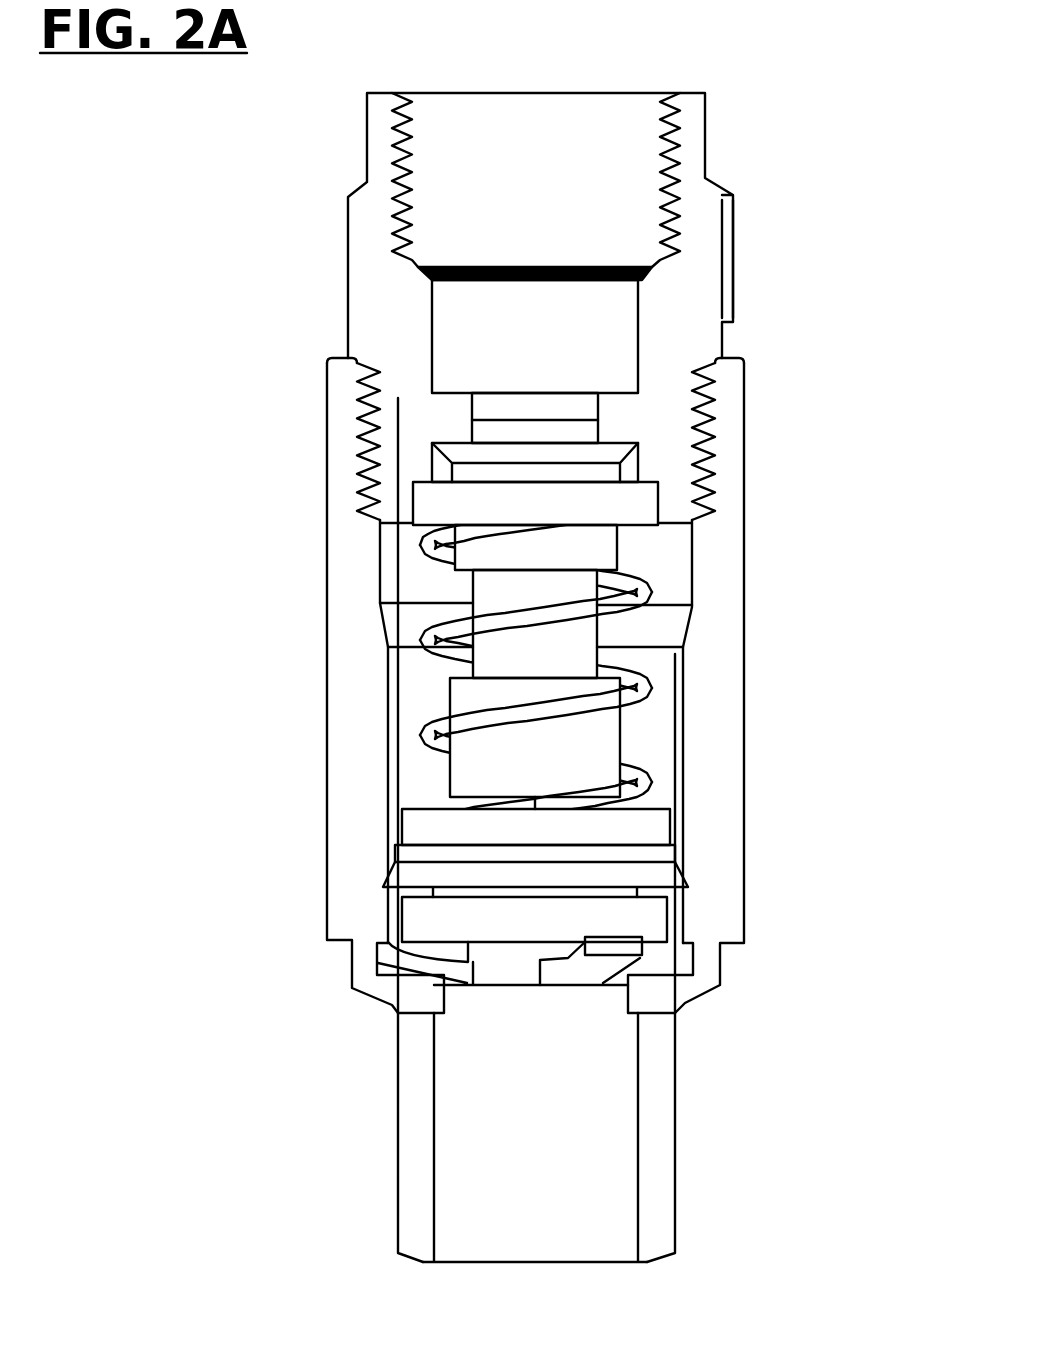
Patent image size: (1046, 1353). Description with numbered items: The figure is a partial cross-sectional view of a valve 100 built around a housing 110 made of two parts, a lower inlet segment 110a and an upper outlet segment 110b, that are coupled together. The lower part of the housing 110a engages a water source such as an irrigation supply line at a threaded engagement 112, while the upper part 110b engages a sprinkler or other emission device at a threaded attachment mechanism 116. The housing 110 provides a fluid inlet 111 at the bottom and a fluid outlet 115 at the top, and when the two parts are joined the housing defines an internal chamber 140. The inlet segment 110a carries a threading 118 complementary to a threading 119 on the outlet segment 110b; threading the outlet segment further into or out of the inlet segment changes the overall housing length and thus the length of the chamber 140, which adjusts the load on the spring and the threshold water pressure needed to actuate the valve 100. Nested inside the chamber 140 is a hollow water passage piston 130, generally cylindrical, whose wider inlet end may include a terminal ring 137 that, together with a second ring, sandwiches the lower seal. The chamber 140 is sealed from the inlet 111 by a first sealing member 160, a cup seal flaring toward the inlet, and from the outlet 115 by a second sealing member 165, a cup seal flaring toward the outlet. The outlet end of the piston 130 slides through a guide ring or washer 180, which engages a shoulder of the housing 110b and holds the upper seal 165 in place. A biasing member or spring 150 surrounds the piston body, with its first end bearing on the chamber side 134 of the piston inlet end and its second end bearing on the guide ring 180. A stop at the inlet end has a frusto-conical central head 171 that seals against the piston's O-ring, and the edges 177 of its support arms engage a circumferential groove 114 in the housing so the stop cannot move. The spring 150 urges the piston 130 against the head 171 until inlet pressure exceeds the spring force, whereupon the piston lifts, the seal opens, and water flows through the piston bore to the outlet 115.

The valve 100 is at (233, 128).
The housing 110 is at (268, 565).
The first or lower part of the housing 110a is at (303, 797).
The second or upper part of the housing 110b is at (302, 256).
The fluid inlet 111 is at (484, 1240).
The engagement 112 is at (675, 1192).
The circumferential groove 114 is at (683, 960).
The fluid outlet 115 is at (583, 312).
The attachment mechanism 116 is at (660, 316).
The threading 118 is at (363, 462).
The threading 119 is at (377, 398).
The hollow water passage piston 130 is at (577, 643).
The chamber side of the inlet end 134 is at (657, 807).
The terminal ring 137 is at (410, 920).
The internal chamber 140 is at (413, 778).
The biasing member or spring 150 is at (662, 690).
The first sealing member 160 is at (667, 885).
The second sealing member 165 is at (613, 453).
The central section or head 171 is at (505, 968).
The edge 177 is at (610, 952).
The guide ring or washer 180 is at (640, 510).